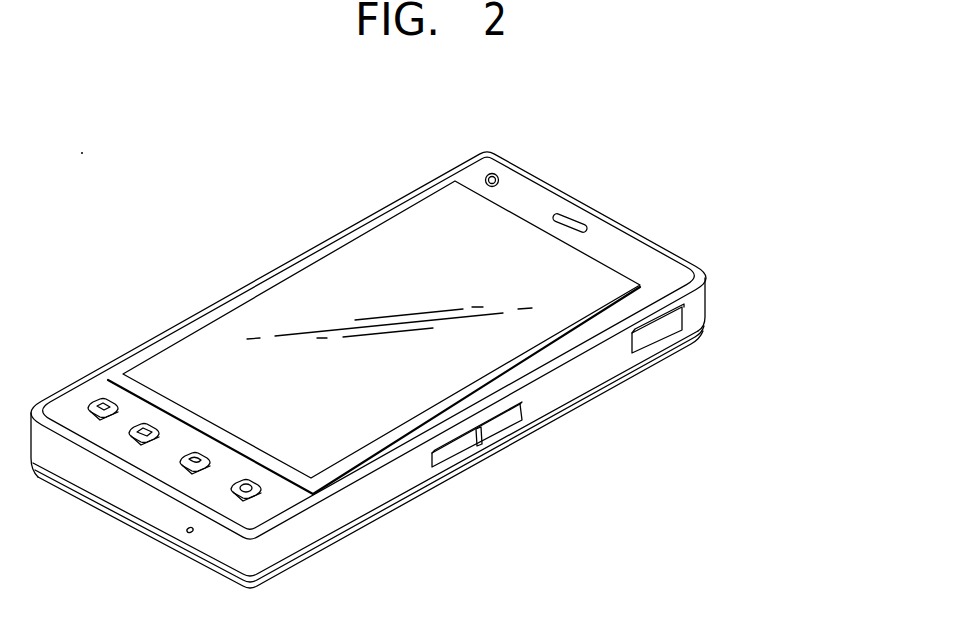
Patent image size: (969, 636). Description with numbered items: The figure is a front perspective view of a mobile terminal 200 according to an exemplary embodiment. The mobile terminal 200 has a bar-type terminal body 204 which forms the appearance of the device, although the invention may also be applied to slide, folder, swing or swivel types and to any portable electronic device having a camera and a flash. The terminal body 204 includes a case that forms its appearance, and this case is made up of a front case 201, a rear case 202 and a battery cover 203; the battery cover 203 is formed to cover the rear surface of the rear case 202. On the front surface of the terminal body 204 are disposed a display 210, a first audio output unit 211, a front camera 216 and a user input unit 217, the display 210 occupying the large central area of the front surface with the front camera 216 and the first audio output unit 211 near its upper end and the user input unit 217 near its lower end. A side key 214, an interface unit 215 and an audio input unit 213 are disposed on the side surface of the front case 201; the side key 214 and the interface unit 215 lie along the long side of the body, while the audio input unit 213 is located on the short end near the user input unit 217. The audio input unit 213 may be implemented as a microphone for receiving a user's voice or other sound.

The mobile terminal 200 is at (215, 259).
The front case 201 is at (704, 273).
The rear case 202 is at (693, 303).
The battery cover 203 is at (679, 345).
The terminal body 204 is at (799, 250).
The display 210 is at (345, 266).
The first audio output unit 211 is at (573, 222).
The audio input unit 213 is at (187, 534).
The side key 214 is at (510, 425).
The interface unit 215 is at (637, 353).
The front camera 216 is at (498, 175).
The user input unit 217 is at (97, 402).